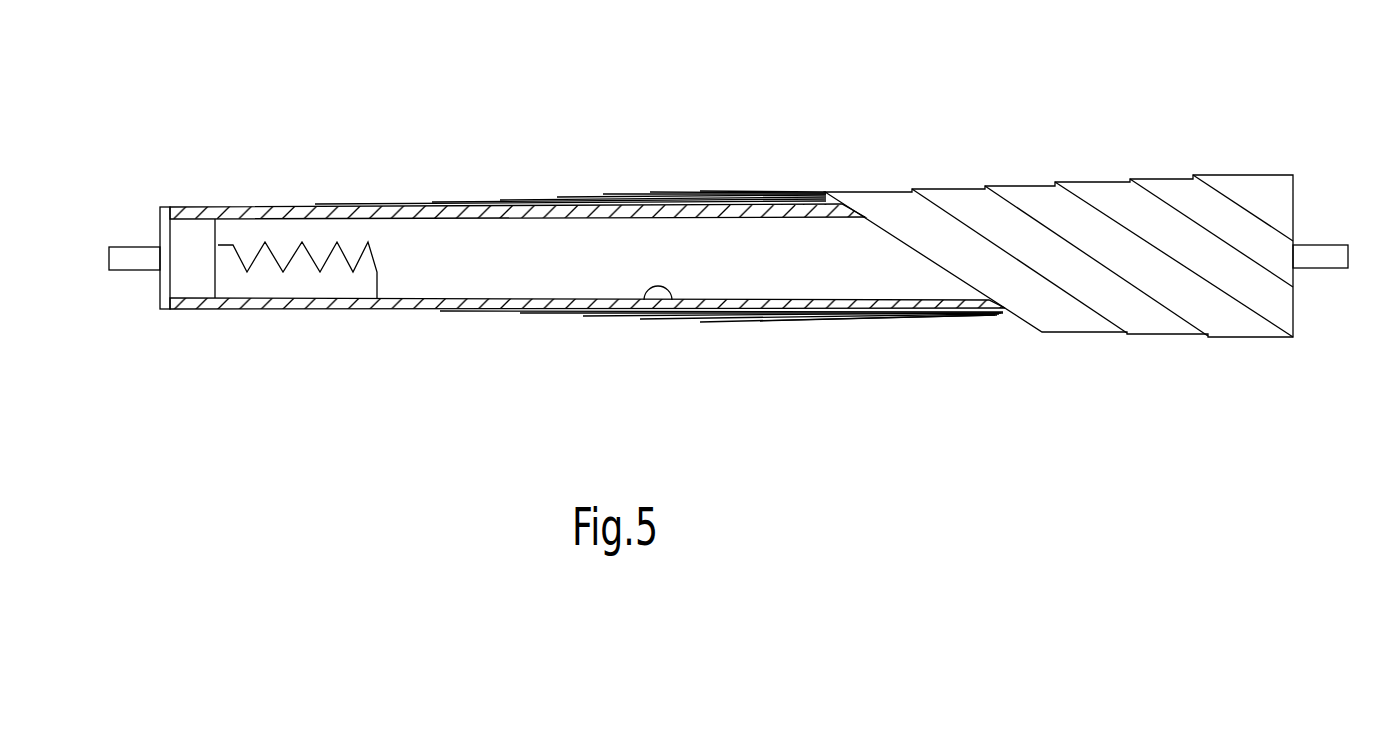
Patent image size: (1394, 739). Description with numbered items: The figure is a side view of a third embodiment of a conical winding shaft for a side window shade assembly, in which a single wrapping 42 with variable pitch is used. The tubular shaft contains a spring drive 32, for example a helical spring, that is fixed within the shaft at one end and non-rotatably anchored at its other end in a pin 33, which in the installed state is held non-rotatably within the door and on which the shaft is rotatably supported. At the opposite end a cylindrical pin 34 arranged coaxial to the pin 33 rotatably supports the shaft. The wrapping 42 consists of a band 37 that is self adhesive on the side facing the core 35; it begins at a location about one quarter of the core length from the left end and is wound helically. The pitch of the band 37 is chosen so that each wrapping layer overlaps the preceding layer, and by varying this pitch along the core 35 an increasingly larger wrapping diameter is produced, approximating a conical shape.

The spring drive 32 is at (327, 266).
The pin 33 is at (133, 262).
The cylindrical pin 34 is at (1322, 257).
The core 35 is at (680, 303).
The band 37 is at (1113, 202).
The wrapping 42 is at (947, 158).